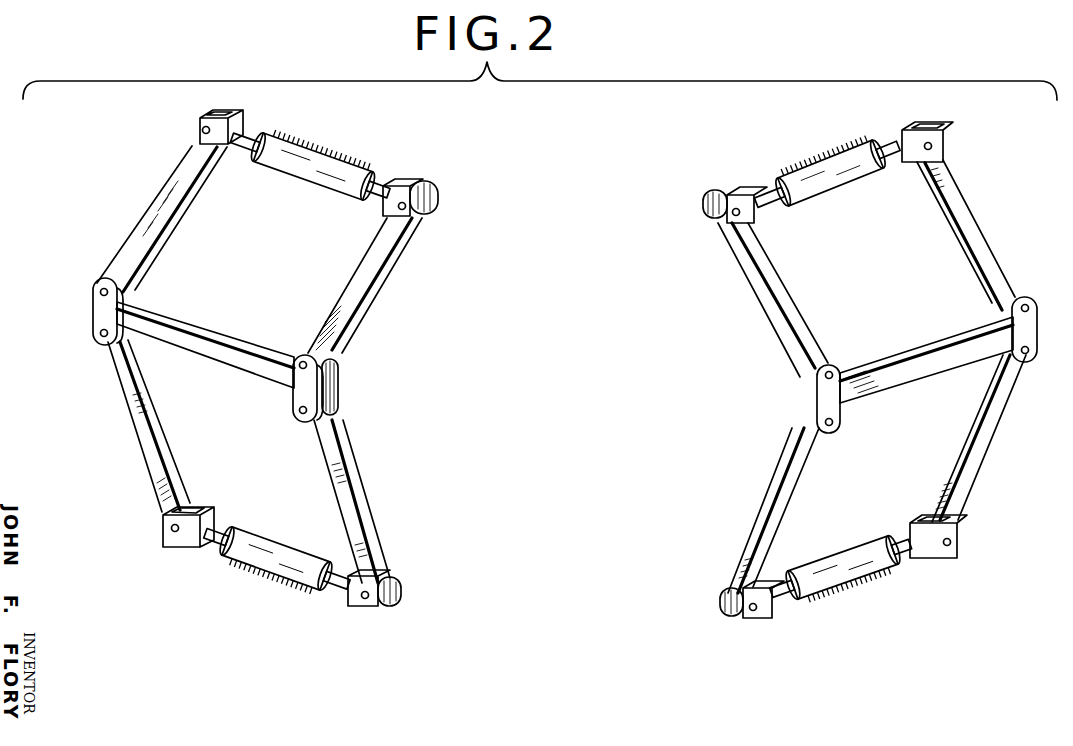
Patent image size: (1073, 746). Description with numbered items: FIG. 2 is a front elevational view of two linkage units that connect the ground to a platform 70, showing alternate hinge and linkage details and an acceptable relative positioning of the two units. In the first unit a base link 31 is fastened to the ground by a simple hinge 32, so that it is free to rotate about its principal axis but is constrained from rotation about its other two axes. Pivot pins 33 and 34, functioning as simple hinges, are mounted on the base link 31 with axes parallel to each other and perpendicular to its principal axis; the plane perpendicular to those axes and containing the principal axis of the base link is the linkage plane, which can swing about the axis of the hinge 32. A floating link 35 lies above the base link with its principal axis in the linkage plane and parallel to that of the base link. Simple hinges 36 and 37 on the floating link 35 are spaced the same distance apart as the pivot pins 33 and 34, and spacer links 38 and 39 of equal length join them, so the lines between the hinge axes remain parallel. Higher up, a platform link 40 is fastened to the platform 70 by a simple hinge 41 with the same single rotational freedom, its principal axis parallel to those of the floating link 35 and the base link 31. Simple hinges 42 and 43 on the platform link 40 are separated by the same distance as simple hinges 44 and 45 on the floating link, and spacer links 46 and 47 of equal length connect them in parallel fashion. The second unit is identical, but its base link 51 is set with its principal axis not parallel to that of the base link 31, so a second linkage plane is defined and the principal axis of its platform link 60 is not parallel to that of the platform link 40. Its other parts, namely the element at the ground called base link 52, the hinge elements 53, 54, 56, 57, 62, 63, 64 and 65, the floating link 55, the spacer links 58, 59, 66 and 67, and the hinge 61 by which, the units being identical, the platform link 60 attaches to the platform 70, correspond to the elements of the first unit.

The base link 31 is at (223, 527).
The simple hinge 32 is at (280, 538).
The pivot pin 33 is at (167, 529).
The pivot pin 34 is at (350, 600).
The floating link 35 is at (207, 325).
The simple hinge 36 is at (97, 337).
The simple hinge 37 is at (293, 410).
The spacer link 38 is at (142, 443).
The spacer link 39 is at (363, 496).
The platform link 40 is at (253, 135).
The simple hinge 41 is at (328, 188).
The simple hinge 42 is at (197, 130).
The simple hinge 43 is at (408, 230).
The simple hinge 44 is at (97, 285).
The simple hinge 45 is at (298, 356).
The spacer link 46 is at (160, 198).
The spacer link 47 is at (347, 289).
The base link 51 is at (907, 537).
The base link 52 is at (805, 563).
The hinge element 53 is at (957, 543).
The hinge element 54 is at (747, 621).
The floating link 55 is at (890, 352).
The hinge element 56 is at (1030, 359).
The hinge element 57 is at (840, 422).
The spacer link 58 is at (983, 438).
The spacer link 59 is at (802, 486).
The platform link 60 is at (767, 187).
The hydraulic cylinder 61 is at (820, 192).
The hinge element 62 is at (943, 146).
The hinge element 63 is at (733, 207).
The hinge element 64 is at (832, 373).
The hinge element 65 is at (1025, 305).
The spacer link 66 is at (953, 181).
The spacer link 67 is at (780, 278).
The platform 70 is at (330, 147).